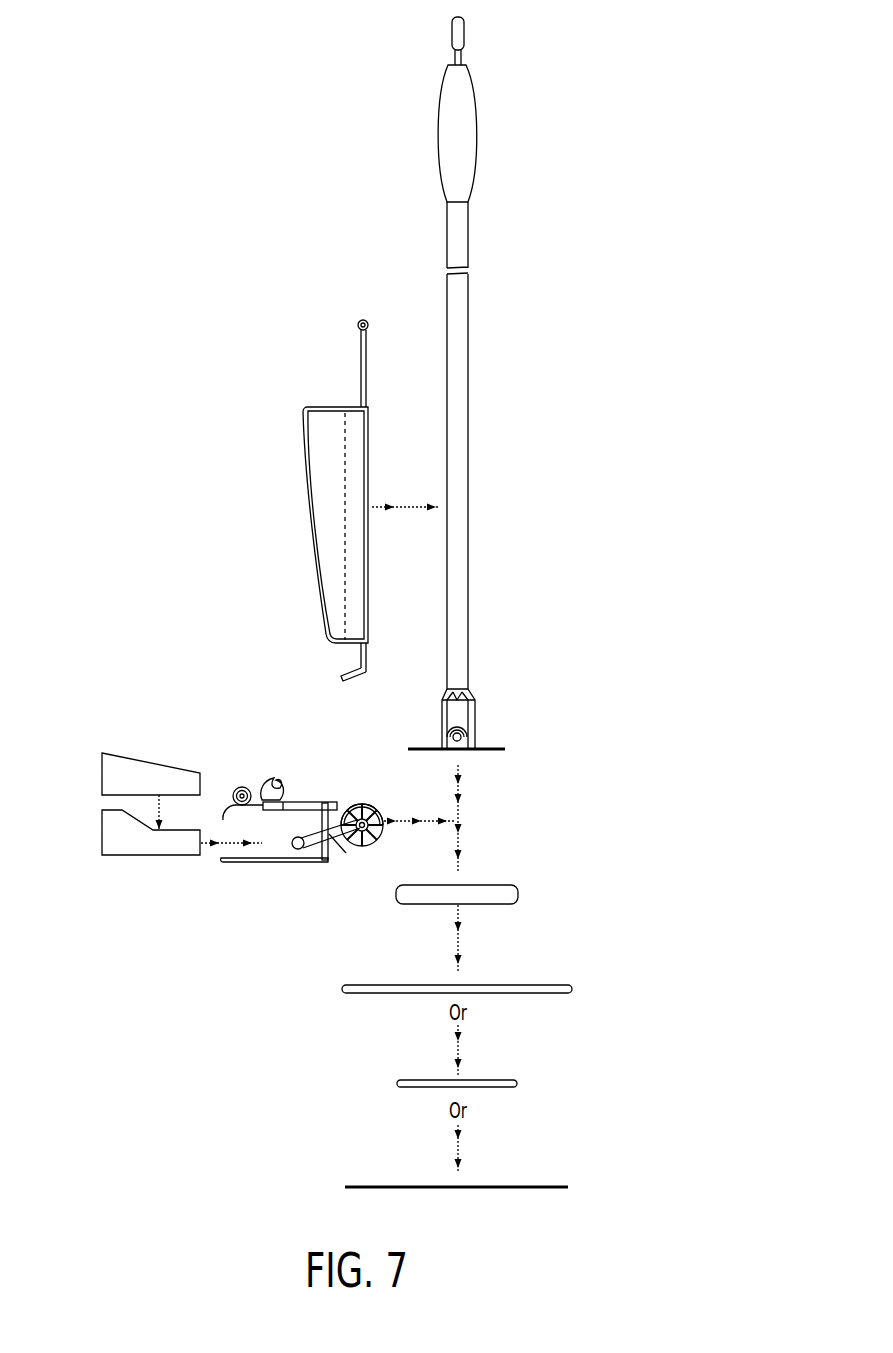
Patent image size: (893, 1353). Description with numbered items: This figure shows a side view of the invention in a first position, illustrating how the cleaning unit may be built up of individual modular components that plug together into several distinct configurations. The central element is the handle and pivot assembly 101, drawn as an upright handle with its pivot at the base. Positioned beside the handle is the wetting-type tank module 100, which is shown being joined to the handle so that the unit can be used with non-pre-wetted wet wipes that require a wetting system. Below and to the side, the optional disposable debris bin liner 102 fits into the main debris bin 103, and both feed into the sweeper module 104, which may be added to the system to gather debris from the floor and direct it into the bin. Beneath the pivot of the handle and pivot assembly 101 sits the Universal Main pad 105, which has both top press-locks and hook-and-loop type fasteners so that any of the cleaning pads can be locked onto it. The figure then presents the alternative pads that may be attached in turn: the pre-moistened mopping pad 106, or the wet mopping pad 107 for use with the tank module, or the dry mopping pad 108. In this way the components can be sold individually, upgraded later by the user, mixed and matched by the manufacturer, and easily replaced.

The tank module 100 is at (327, 510).
The handle and pivot assembly 101 is at (425, 748).
The disposable debris bin liner 102 is at (98, 770).
The main debris bin 103 is at (98, 825).
The sweeper module 104 is at (250, 863).
The Universal Main pad 105 is at (520, 893).
The pre-moistened mopping pad 106 is at (342, 989).
The wet mopping pad 107 is at (397, 1083).
The dry mopping pad 108 is at (345, 1187).